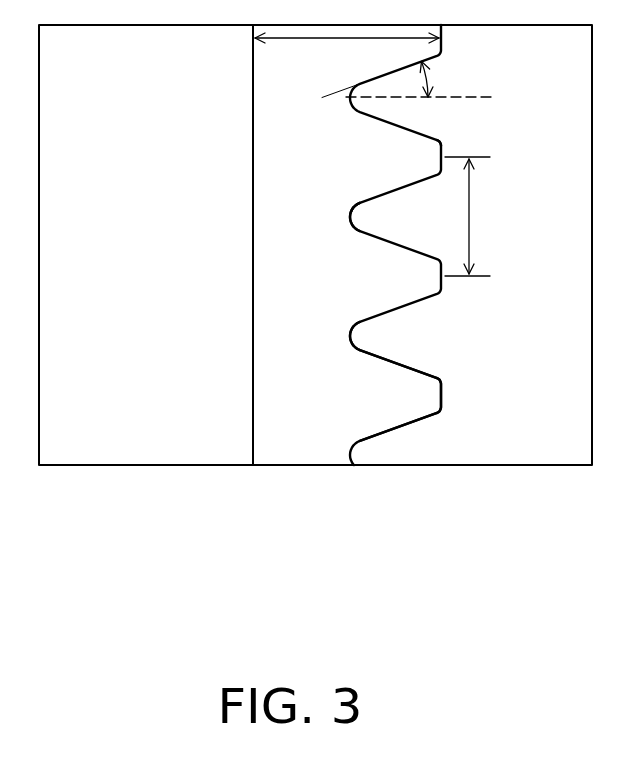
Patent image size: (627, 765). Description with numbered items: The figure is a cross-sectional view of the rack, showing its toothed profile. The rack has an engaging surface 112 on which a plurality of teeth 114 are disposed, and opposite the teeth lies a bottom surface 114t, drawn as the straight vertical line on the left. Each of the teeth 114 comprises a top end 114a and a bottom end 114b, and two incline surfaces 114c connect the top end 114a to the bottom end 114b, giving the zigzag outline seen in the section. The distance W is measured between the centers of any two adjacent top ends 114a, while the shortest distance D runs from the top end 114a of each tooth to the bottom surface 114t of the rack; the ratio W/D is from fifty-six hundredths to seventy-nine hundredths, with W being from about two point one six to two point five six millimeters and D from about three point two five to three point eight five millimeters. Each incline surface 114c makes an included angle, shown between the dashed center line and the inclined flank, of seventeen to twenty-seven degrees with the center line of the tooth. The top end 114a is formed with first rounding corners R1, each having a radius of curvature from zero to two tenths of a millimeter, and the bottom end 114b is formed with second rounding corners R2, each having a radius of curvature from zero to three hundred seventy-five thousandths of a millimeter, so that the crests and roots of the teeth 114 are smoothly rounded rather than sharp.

The engaging surface 112 is at (347, 215).
The teeth 114 is at (366, 246).
The top end 114a is at (443, 395).
The bottom end 114b is at (346, 337).
The incline surfaces 114c is at (413, 368).
The bottom surface 114t is at (250, 396).
The first rounding corners R1 is at (442, 141).
The second rounding corners R2 is at (347, 204).
The shortest distance D is at (347, 55).
The distance between centers of adjacent top ends W is at (472, 216).